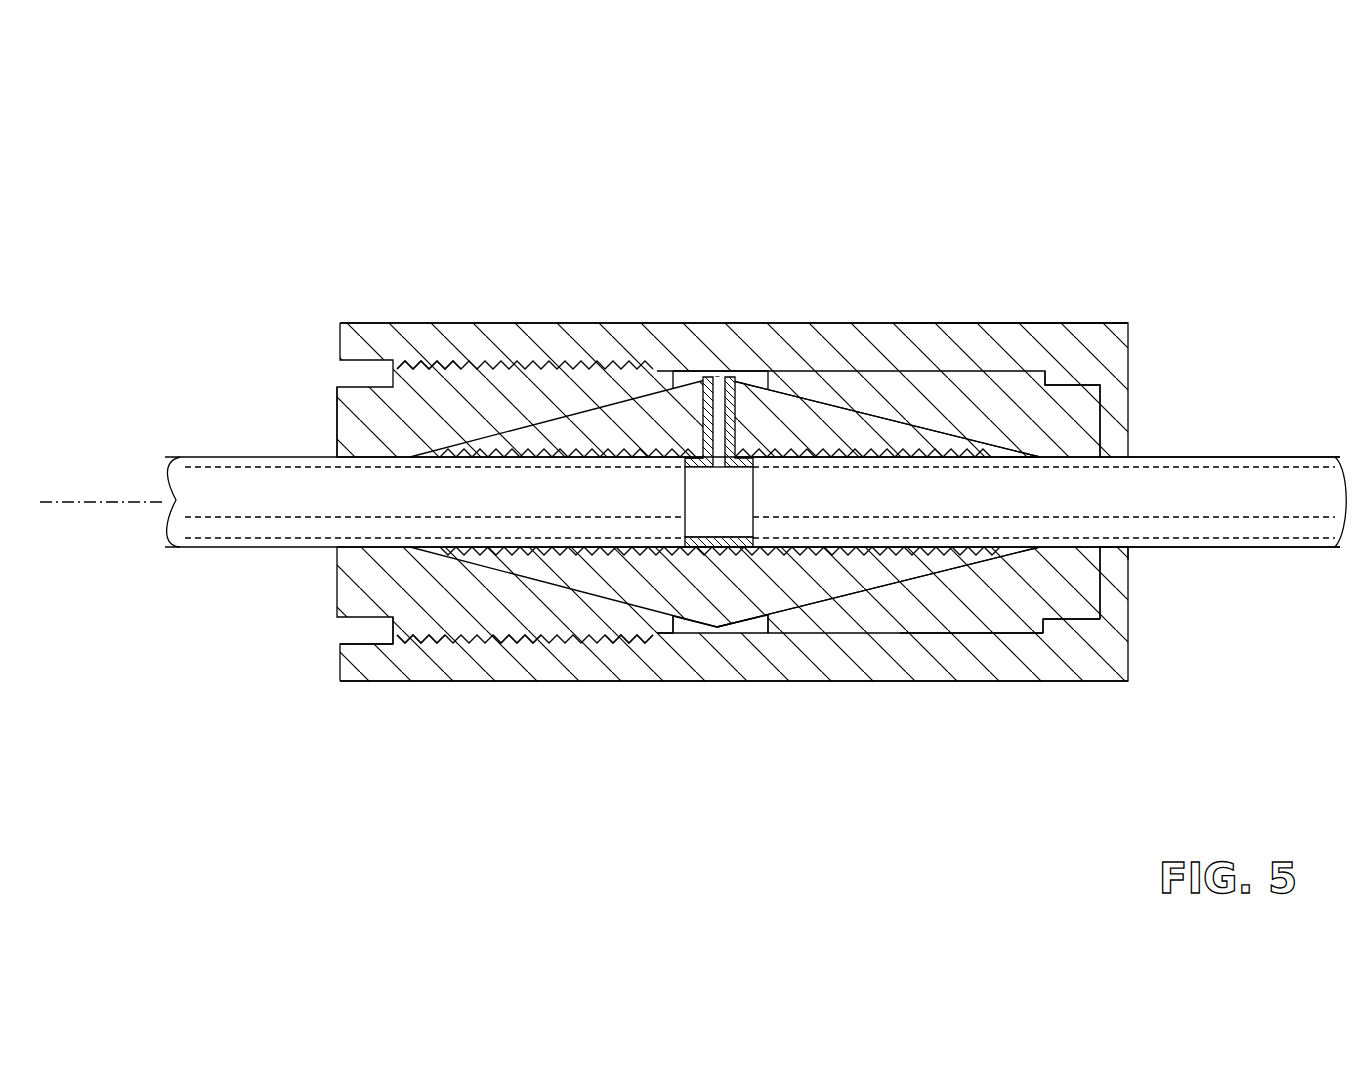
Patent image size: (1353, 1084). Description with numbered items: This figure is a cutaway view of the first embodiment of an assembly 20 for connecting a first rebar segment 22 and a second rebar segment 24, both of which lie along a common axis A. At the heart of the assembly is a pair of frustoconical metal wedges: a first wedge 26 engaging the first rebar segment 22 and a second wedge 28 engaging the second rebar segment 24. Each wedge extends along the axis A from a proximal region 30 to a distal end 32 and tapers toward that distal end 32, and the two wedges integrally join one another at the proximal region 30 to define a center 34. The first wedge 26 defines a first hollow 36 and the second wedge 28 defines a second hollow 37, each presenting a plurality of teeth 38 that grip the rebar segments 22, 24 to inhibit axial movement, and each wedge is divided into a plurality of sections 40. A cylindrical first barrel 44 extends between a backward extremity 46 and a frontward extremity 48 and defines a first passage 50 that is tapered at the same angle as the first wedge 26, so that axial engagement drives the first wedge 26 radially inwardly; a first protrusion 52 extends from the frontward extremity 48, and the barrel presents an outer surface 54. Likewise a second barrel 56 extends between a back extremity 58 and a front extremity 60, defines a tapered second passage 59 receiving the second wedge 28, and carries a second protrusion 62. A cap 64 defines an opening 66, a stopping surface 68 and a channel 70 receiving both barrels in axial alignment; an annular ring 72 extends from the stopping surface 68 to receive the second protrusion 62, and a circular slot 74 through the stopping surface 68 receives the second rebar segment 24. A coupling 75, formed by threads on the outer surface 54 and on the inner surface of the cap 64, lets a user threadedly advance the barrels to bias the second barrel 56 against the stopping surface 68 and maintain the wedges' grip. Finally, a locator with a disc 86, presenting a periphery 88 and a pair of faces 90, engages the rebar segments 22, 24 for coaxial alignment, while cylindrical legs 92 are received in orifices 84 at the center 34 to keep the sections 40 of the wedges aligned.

The assembly 20 is at (885, 215).
The first rebar segment 22 is at (200, 475).
The second rebar segment 24 is at (1200, 472).
The first wedge 26 is at (580, 400).
The second wedge 28 is at (907, 413).
The proximal region 30 is at (640, 398).
The distal end 32 is at (440, 455).
The center 34 is at (720, 624).
The first hollow 36 is at (515, 456).
The second hollow 37 is at (950, 455).
The teeth 38 is at (878, 550).
The sections 40 is at (548, 425).
The first barrel 44 is at (425, 652).
The backward extremity 46 is at (392, 632).
The frontward extremity 48 is at (690, 640).
The first passage 50 is at (630, 634).
The first protrusion 52 is at (338, 412).
The outer surface 54 is at (520, 646).
The second barrel 56 is at (1020, 638).
The back extremity 58 is at (768, 632).
The second passage 59 is at (870, 417).
The front extremity 60 is at (1047, 627).
The second protrusion 62 is at (1100, 583).
The cap 64 is at (982, 322).
The opening 66 is at (350, 638).
The stopping surface 68 is at (1075, 395).
The channel 70 is at (688, 371).
The annular ring 72 is at (1080, 625).
The slot 74 is at (1125, 540).
The coupling 75 is at (470, 358).
The orifices 84 is at (728, 372).
The disc 86 is at (770, 507).
The periphery 88 is at (685, 528).
The faces 90 is at (780, 610).
The legs 92 is at (685, 462).
The axis A is at (80, 502).